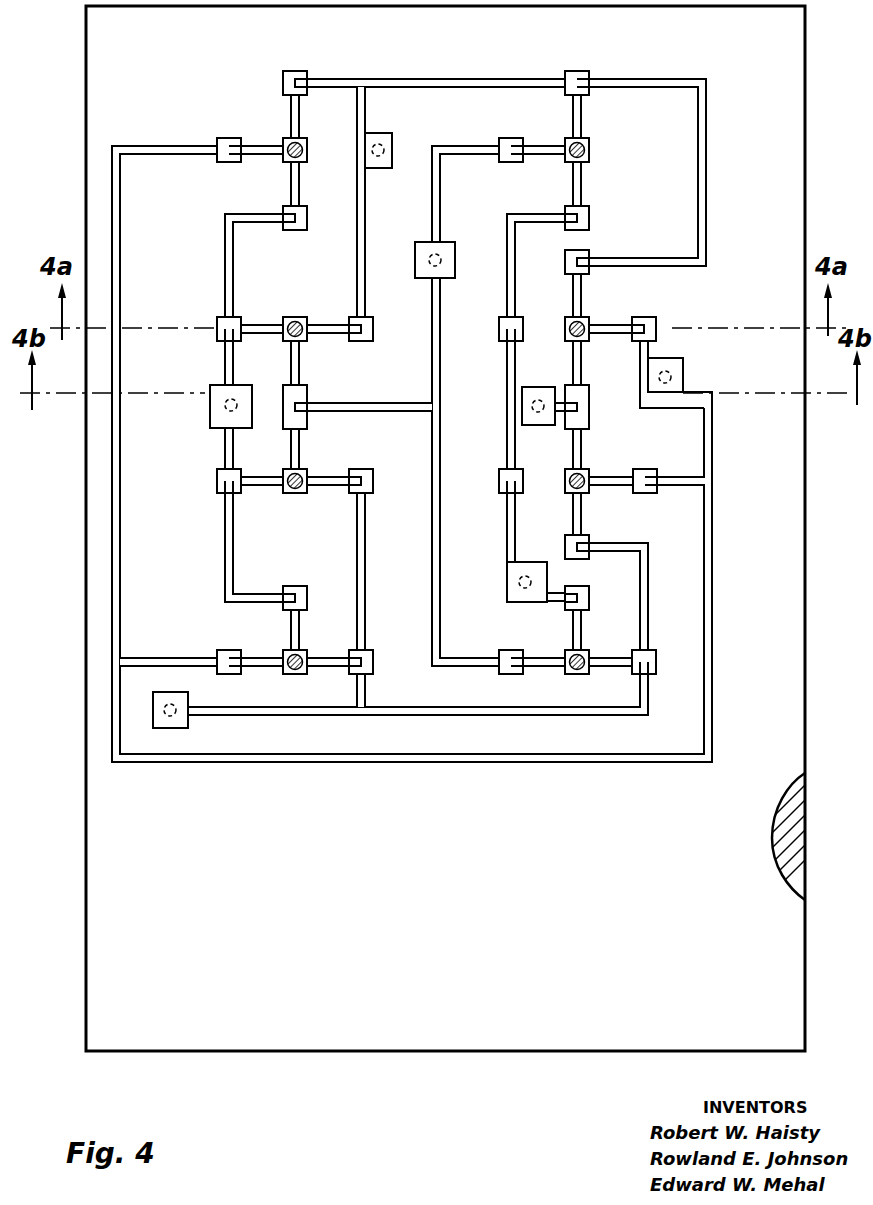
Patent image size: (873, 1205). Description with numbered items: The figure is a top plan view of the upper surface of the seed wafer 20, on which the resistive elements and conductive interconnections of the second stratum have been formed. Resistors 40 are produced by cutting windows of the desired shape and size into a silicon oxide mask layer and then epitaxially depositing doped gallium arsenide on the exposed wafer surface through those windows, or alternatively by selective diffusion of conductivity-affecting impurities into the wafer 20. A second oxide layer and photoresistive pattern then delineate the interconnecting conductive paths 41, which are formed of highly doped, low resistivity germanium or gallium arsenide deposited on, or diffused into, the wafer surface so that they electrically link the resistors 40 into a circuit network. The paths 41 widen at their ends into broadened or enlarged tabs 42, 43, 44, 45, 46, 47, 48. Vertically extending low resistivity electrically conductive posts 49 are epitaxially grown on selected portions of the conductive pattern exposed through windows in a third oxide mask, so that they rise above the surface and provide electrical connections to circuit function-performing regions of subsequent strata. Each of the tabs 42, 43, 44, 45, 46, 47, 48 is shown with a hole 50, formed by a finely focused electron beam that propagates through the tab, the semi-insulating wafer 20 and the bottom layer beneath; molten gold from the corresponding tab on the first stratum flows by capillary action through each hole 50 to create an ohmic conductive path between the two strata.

The seed wafer 20 is at (797, 815).
The resistors 40 is at (291, 108).
The interconnecting conductive paths 41 is at (318, 78).
The tab 42 is at (512, 581).
The tab 43 is at (174, 695).
The tab 44 is at (211, 407).
The tab 45 is at (684, 379).
The tab 46 is at (448, 242).
The tab 47 is at (375, 133).
The tab 48 is at (538, 387).
The electrically conductive posts 49 is at (307, 148).
The holes 50 is at (379, 165).